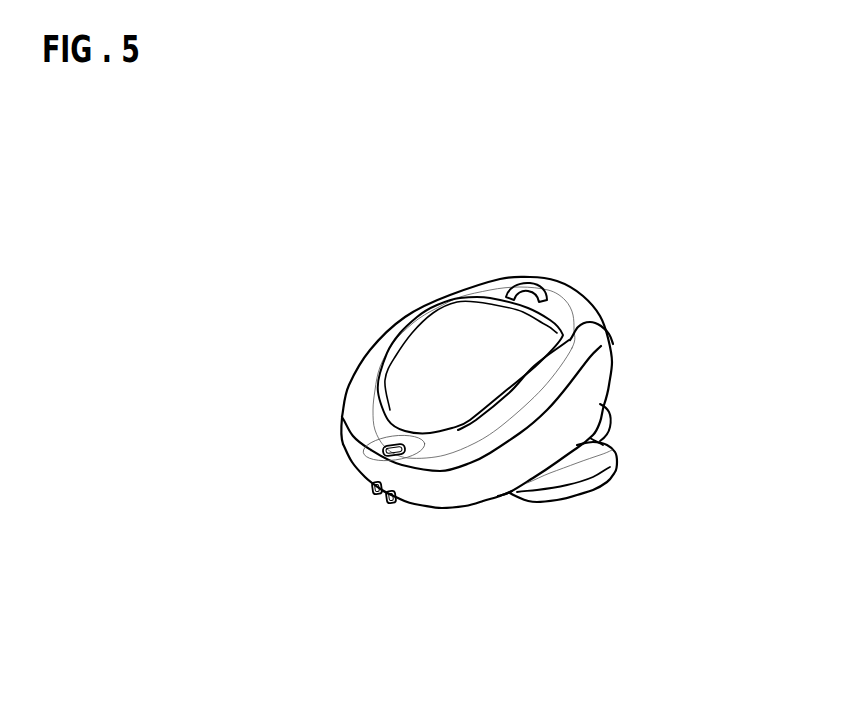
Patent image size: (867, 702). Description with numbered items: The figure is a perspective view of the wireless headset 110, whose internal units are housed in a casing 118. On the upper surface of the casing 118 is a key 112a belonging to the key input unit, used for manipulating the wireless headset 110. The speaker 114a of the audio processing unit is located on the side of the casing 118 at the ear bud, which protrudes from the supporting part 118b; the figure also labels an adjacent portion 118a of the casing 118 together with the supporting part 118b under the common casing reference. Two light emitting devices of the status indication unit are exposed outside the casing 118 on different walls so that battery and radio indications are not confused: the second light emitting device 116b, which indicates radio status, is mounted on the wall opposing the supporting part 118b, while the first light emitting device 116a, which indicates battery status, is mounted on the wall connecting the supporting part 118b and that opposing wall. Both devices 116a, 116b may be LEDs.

The wireless headset 110 is at (351, 256).
The key 112a is at (498, 285).
The speaker 114a is at (565, 500).
The first light emitting device 116a is at (373, 495).
The second light emitting device 116b is at (388, 443).
The casing 118 is at (625, 383).
The wing coupling portion 118a is at (603, 437).
The supporting part 118b is at (613, 353).